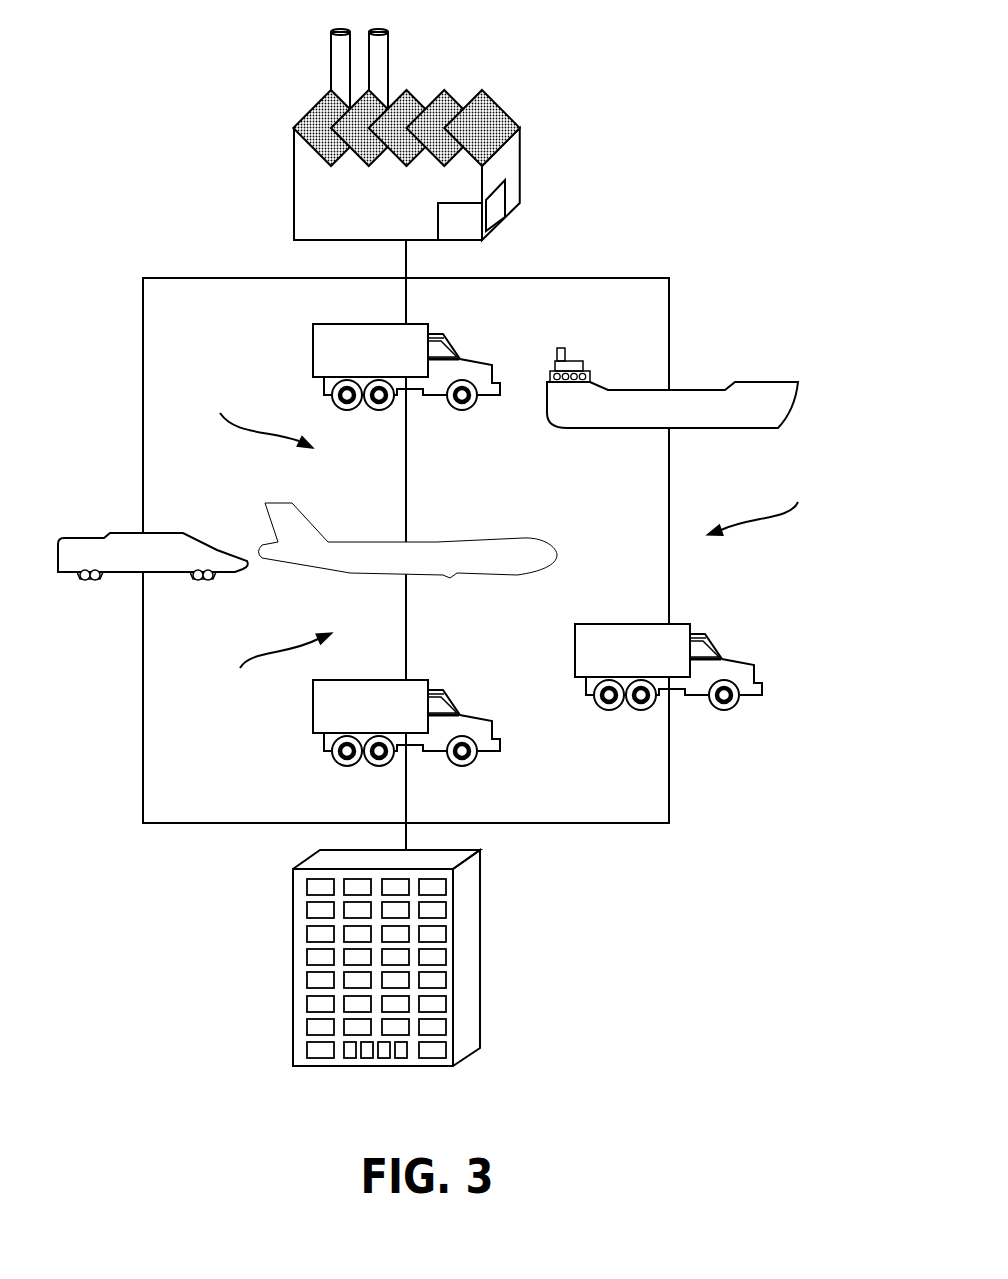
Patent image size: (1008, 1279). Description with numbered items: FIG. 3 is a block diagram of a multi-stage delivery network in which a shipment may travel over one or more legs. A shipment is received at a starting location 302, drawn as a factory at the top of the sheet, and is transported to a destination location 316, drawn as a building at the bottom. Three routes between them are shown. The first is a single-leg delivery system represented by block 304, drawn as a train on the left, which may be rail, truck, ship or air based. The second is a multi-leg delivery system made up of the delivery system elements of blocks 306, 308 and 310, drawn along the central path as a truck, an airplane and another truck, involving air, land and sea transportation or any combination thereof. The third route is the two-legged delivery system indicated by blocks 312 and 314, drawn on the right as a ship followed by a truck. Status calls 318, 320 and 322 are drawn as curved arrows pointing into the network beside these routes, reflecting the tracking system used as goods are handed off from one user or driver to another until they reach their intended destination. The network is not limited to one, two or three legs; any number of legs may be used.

The starting location 302 is at (484, 90).
The single-leg delivery system 304 is at (167, 533).
The delivery system element 306 is at (427, 330).
The delivery system element 308 is at (523, 538).
The delivery system element 310 is at (427, 684).
The two-legged delivery system block 312 is at (782, 380).
The two-legged delivery system block 314 is at (707, 632).
The destination location 316 is at (482, 967).
The status call 318 is at (232, 394).
The status call 320 is at (250, 685).
The status call 322 is at (787, 483).